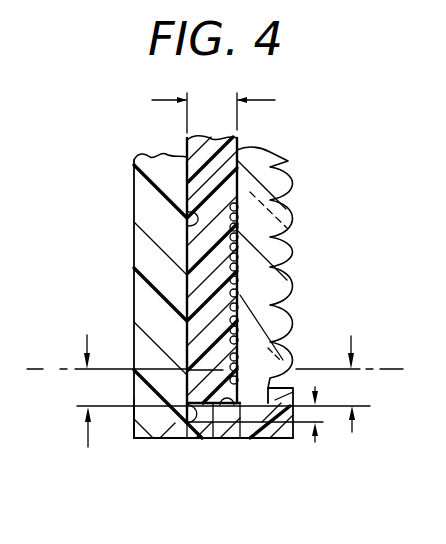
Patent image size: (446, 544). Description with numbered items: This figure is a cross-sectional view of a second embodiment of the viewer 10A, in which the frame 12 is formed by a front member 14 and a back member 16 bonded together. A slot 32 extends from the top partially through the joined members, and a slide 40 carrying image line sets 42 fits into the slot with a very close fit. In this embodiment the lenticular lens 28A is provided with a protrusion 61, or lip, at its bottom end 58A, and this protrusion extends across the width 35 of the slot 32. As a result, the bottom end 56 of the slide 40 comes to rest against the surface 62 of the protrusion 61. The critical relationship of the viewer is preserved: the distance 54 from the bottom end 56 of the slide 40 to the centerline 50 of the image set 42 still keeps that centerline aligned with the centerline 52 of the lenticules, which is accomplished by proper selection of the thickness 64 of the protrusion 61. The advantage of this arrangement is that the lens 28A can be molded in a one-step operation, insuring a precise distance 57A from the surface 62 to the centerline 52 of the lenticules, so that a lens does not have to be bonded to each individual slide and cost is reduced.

The viewer 10A is at (310, 296).
The frame 12 is at (133, 421).
The front member 14 is at (281, 439).
The back member 16 is at (134, 277).
The lenticular lens 28A is at (298, 208).
The slot 32 is at (186, 246).
The slot width 35 is at (152, 100).
The slide 40 is at (187, 192).
The image line sets 42 is at (190, 397).
The centerline of image sets 50 is at (43, 367).
The centerline of lenticules 52 is at (401, 367).
The distance 54 is at (88, 445).
The bottom end of slide 56 is at (172, 435).
The distance 57A is at (352, 432).
The bottom end of lenticular lens 58A is at (224, 438).
The protrusion 61 is at (202, 436).
The surface of protrusion 62 is at (258, 430).
The thickness of protrusion 64 is at (316, 441).